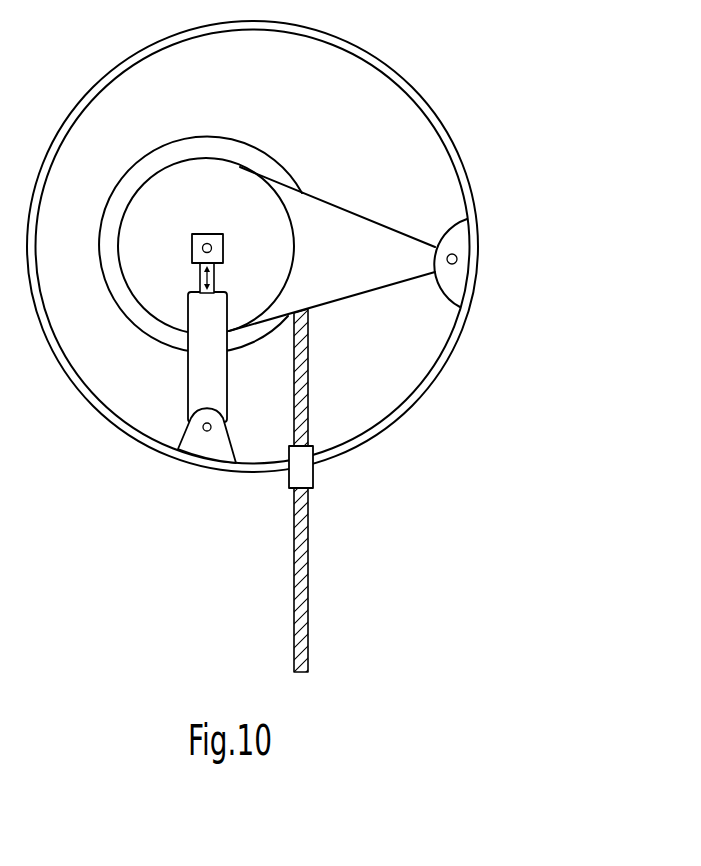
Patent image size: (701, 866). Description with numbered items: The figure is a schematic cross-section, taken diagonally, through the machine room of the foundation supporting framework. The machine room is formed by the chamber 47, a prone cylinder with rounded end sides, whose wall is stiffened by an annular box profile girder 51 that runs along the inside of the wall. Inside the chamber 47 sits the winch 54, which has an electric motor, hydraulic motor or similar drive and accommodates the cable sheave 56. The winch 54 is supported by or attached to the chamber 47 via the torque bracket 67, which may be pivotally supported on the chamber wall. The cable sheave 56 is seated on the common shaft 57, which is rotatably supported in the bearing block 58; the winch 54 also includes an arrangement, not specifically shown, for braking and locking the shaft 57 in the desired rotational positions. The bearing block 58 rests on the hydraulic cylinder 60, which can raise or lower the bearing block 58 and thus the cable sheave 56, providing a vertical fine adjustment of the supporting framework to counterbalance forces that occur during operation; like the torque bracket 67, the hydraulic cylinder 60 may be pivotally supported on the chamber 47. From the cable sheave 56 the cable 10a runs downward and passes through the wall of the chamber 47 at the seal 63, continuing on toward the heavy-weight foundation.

The chamber 47 is at (445, 128).
The annular box profile girder 51 is at (445, 343).
The cable sheave 56 is at (192, 153).
The winch 54 is at (230, 185).
The torque bracket 67 is at (335, 232).
The bearing block 58 is at (198, 233).
The shaft 57 is at (213, 248).
The hydraulic cylinder 60 is at (203, 378).
The seal 63 is at (302, 477).
The cable 10a is at (308, 582).